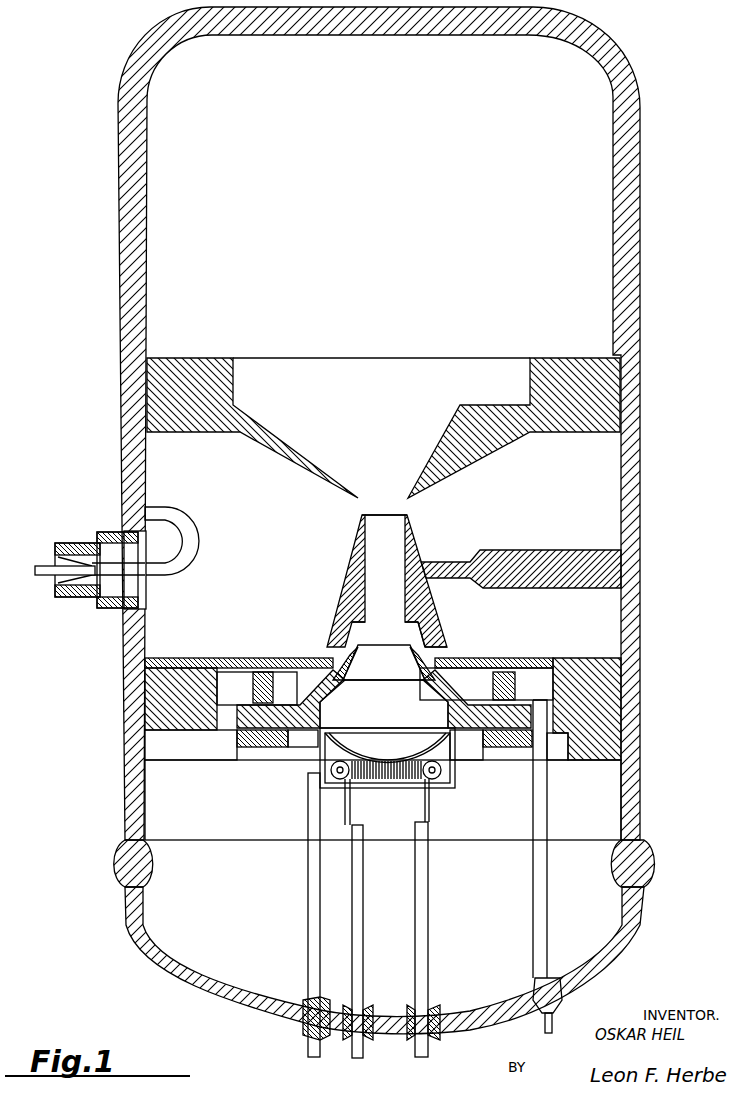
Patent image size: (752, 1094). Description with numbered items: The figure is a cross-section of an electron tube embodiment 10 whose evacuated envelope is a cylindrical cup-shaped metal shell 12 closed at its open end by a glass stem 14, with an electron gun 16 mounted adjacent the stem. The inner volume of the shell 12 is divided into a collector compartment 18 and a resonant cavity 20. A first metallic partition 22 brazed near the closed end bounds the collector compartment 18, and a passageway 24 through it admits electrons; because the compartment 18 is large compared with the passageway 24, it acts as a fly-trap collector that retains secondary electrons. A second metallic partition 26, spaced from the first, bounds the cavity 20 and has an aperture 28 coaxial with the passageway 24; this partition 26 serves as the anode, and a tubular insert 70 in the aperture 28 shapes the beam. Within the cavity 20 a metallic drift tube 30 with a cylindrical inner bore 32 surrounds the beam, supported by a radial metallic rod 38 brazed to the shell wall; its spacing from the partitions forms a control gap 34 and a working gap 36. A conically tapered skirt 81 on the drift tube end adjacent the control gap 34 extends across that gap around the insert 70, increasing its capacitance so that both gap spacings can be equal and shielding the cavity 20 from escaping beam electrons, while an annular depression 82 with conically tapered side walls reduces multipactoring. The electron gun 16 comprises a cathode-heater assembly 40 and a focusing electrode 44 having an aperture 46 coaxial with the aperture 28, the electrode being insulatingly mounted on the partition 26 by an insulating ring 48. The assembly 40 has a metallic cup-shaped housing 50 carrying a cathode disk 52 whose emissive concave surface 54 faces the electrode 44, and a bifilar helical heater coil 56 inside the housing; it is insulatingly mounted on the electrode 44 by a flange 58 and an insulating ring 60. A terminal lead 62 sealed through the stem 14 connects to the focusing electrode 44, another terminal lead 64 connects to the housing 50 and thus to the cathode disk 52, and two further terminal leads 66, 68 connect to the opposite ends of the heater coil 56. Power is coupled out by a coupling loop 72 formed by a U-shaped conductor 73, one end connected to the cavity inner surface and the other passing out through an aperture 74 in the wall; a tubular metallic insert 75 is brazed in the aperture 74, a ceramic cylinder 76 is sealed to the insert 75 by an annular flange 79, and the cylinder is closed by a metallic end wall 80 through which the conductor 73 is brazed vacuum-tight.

The embodiment 10 is at (407, 520).
The cup-shaped metal shell 12 is at (627, 291).
The glass stem 14 is at (633, 922).
The electron gun 16 is at (265, 767).
The collector compartment 18 is at (386, 200).
The resonant cavity 20 is at (556, 488).
The first metallic partition 22 is at (203, 372).
The passageway 24 is at (388, 439).
The second metallic partition 26 is at (177, 673).
The aperture 28 is at (392, 668).
The drift tube 30 is at (352, 572).
The inner bore 32 is at (393, 570).
The control gap 34 is at (392, 625).
The working gap 36 is at (373, 505).
The metallic rod 38 is at (535, 556).
The cathode-heater assembly 40 is at (437, 790).
The focusing electrode 44 is at (322, 698).
The aperture 46 is at (392, 701).
The insulating ring 48 is at (255, 690).
The cup-shaped housing 50 is at (378, 788).
The cathode disk 52 is at (313, 765).
The concave surface 54 is at (392, 755).
The heater coil 56 is at (390, 790).
The flange 58 is at (470, 760).
The insulating ring 60 is at (528, 748).
The terminal lead 62 is at (543, 887).
The terminal lead 64 is at (317, 895).
The terminal lead 66 is at (357, 925).
The terminal lead 68 is at (427, 920).
The tubular insert 70 is at (350, 655).
The coupling loop 72 is at (200, 522).
The conductor 73 is at (193, 551).
The aperture 74 is at (140, 587).
The tubular metallic insert 75 is at (110, 612).
The ceramic cylinder 76 is at (70, 597).
The annular flange 79 is at (97, 603).
The metallic end wall 80 is at (55, 567).
The conically tapered skirt 81 is at (440, 628).
The annular depression 82 is at (433, 650).